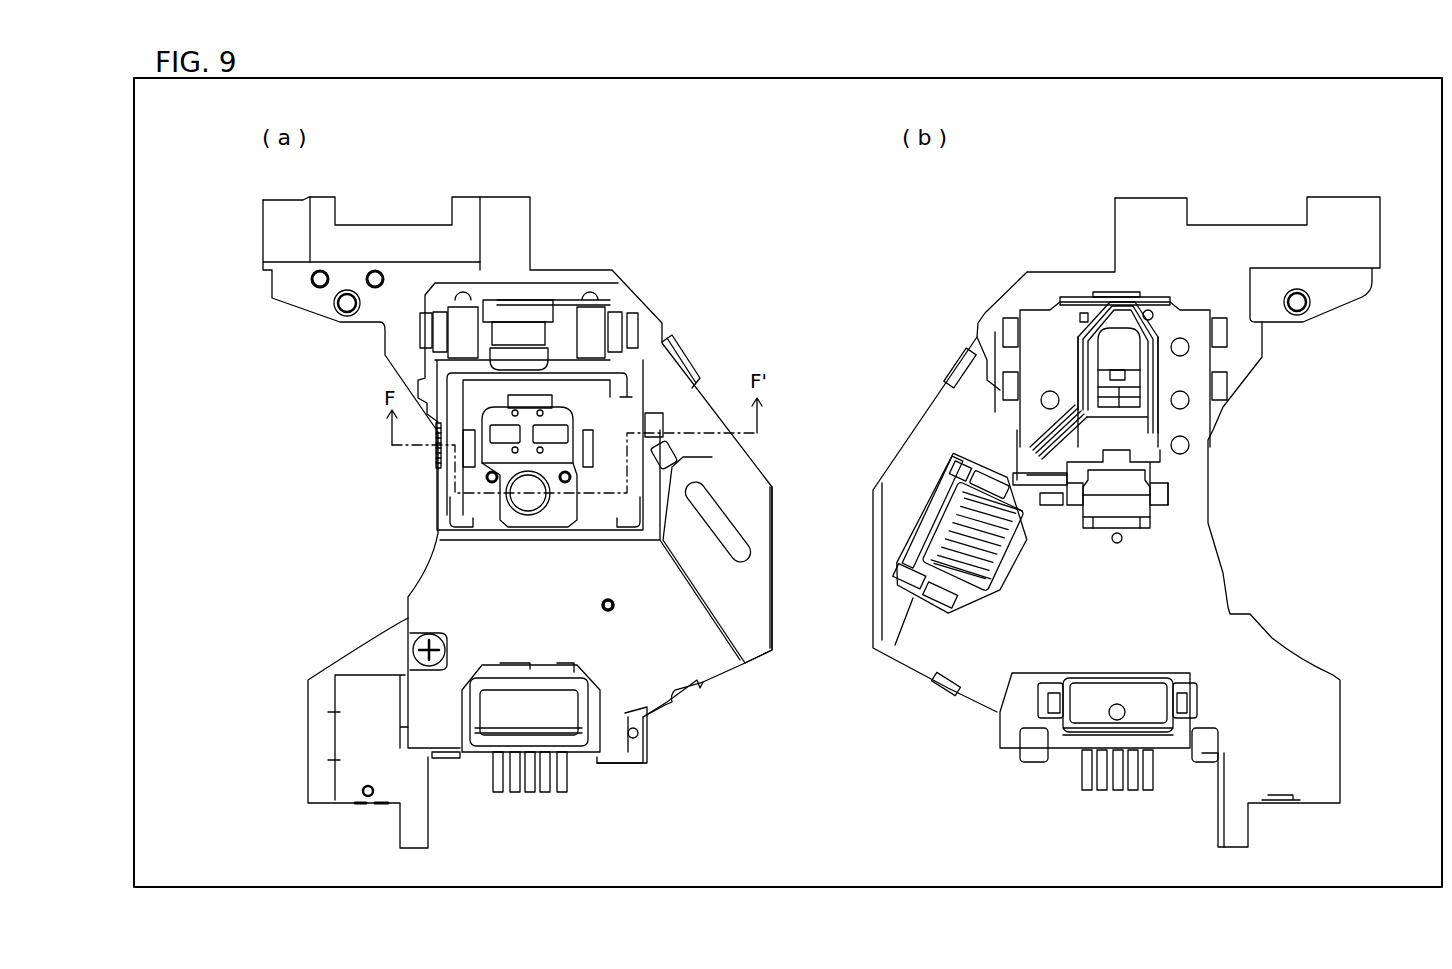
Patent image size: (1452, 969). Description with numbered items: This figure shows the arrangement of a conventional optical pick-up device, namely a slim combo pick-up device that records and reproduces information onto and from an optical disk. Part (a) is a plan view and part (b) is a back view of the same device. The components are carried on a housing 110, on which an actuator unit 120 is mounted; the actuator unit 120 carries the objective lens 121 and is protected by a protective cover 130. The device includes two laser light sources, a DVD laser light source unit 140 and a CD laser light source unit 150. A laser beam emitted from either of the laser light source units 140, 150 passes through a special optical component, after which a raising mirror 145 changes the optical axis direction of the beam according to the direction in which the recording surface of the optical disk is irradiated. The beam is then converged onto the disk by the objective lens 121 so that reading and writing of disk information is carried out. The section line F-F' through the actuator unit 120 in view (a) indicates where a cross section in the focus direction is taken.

The housing 110 is at (515, 235).
The actuator unit 120 is at (557, 417).
The objective lens 121 is at (517, 500).
The protective cover 130 is at (630, 413).
The DVD laser light source unit 140 is at (930, 520).
The raising mirror 145 is at (1135, 480).
The CD laser light source unit 150 is at (550, 710).